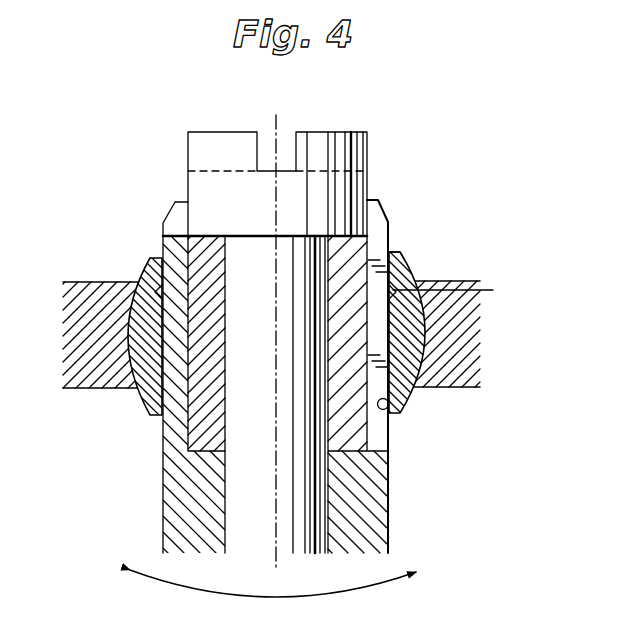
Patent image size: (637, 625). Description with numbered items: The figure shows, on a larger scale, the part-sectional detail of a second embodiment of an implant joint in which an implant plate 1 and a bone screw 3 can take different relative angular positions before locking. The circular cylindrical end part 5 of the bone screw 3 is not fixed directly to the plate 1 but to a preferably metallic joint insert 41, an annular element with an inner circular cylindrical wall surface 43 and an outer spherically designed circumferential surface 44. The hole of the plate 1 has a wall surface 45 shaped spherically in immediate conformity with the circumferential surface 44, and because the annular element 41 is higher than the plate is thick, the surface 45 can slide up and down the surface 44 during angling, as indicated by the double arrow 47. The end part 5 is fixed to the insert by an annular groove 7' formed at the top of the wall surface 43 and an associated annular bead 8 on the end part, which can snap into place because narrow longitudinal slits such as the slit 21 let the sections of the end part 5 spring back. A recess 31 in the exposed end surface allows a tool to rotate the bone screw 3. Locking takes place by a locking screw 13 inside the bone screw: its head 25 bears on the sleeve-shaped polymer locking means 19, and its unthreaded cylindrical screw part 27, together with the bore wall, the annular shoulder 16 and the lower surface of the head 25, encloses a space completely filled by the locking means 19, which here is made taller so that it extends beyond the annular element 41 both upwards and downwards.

The implant plate 1 is at (83, 282).
The bone screw 3 is at (160, 507).
The end part 5 is at (173, 253).
The annular groove 7' is at (437, 311).
The annular bead 8 is at (452, 291).
The locking screw 13 is at (206, 126).
The annular shoulder 16 is at (203, 455).
The locking means 19 is at (200, 427).
The slit 21 is at (377, 225).
The head 25 is at (327, 150).
The first unthreaded cylindrical screw part 27 is at (242, 510).
The recess 31 is at (180, 222).
The joint insert 41 is at (402, 268).
The inner circular cylindrical wall surface 43 is at (390, 425).
The outer spherically designed circumferential surface 44 is at (408, 398).
The wall surface 45 is at (425, 340).
The double arrow 47 is at (273, 597).